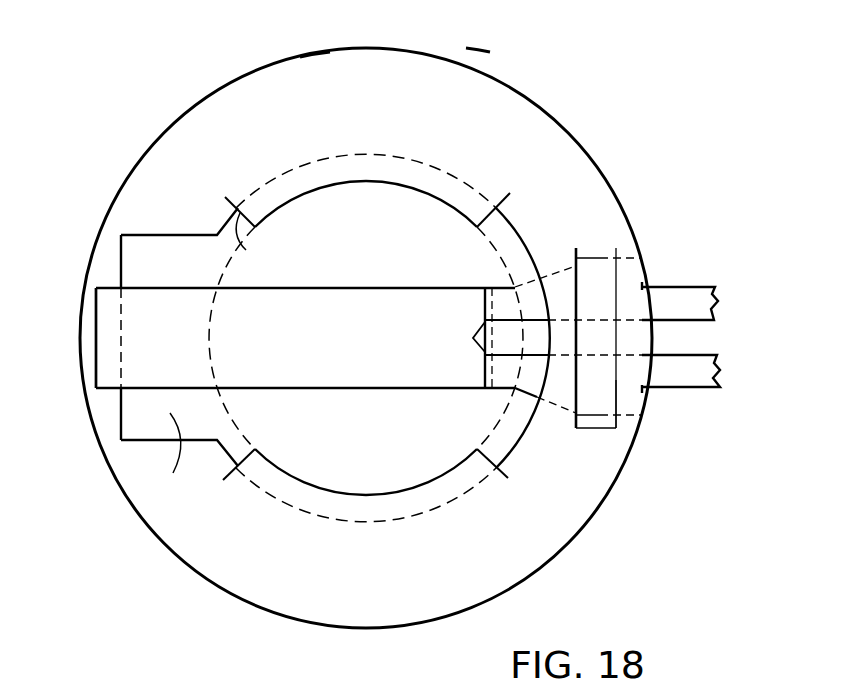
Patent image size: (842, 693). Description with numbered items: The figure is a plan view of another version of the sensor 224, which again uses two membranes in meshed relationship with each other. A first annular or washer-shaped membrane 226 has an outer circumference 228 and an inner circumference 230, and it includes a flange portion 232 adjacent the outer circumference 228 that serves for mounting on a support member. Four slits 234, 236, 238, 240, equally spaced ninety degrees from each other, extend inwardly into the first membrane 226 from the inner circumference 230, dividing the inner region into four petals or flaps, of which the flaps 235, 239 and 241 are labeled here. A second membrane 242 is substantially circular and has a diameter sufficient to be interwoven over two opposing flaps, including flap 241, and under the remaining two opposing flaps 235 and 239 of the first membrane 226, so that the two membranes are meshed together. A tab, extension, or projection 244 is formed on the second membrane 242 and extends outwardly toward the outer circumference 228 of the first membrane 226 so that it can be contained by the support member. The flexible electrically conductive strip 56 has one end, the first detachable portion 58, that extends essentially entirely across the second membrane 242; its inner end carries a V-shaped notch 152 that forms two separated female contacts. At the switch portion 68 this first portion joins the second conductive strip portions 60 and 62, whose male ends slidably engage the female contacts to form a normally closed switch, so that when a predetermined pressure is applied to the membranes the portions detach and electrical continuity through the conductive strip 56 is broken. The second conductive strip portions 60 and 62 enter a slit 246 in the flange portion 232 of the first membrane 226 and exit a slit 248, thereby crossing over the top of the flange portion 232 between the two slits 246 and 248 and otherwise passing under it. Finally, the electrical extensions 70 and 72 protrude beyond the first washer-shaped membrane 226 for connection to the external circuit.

The sensor 224 is at (150, 70).
The first annular membrane 226 is at (512, 90).
The outer circumference 228 is at (478, 64).
The flange portion 232 is at (313, 73).
The inner circumference 230 is at (405, 183).
The flap 235 is at (360, 168).
The flap 239 is at (365, 507).
The second membrane 242 is at (229, 215).
The slit 236 is at (503, 202).
The slit 240 is at (252, 454).
The slit 238 is at (500, 455).
The slit 234 is at (246, 250).
The flap 241 is at (187, 457).
The tab 244 is at (148, 233).
The conductive strip 56 is at (105, 285).
The first detachable portion 58 is at (380, 342).
The V-shaped notch 152 is at (473, 343).
The switch portion 68 is at (497, 396).
The slit 246 is at (593, 272).
The second conductive strip portion 60 is at (600, 286).
The slit 248 is at (612, 380).
The second conductive strip portion 62 is at (600, 377).
The electrical extension 70 is at (688, 303).
The electrical extension 72 is at (683, 373).